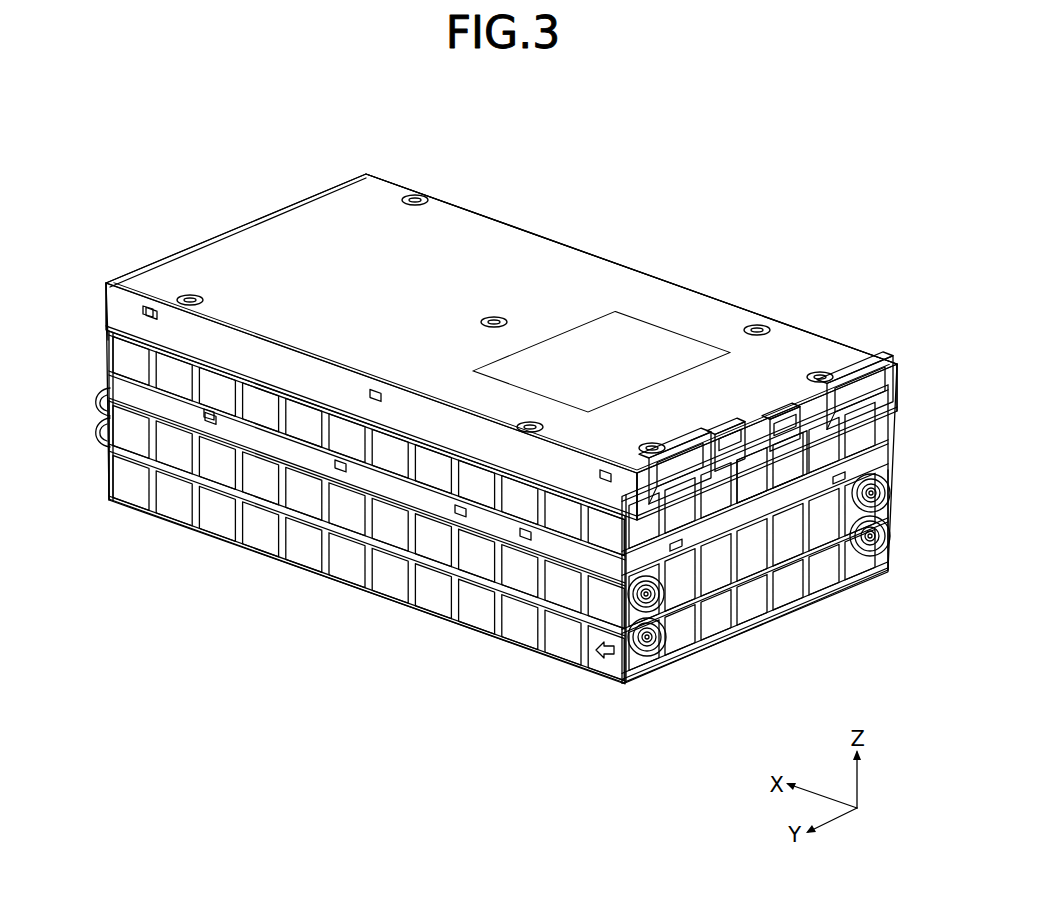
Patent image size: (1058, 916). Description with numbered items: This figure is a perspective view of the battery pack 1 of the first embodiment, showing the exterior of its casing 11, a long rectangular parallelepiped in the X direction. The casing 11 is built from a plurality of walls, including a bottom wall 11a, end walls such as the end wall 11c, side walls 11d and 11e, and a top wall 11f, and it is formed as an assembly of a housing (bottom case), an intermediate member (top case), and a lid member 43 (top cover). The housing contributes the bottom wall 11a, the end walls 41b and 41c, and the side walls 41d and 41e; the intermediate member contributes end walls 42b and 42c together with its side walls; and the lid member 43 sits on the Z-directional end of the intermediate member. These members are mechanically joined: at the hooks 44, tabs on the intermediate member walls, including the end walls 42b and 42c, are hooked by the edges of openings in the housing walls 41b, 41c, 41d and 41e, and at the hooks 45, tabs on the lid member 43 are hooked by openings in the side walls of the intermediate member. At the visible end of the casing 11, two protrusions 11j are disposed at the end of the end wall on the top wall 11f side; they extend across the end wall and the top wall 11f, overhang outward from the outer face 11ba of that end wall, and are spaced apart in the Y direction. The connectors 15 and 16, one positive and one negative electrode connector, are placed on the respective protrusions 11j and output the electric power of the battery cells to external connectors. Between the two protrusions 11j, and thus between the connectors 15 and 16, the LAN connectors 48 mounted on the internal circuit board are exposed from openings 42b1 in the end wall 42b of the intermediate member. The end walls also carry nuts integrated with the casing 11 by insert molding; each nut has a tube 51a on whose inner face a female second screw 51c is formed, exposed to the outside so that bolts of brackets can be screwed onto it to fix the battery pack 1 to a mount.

The battery pack 1 is at (330, 147).
The casing 11 is at (416, 192).
The bottom wall 11a is at (208, 543).
The outer face of end wall 11ba is at (695, 672).
The end wall 11c is at (108, 311).
The side wall 11d is at (388, 570).
The side wall 11e is at (530, 236).
The top wall 11f is at (485, 242).
The protrusion 11j is at (590, 585).
The connector 15 is at (836, 378).
The connector 16 is at (675, 478).
The end wall of housing 41b is at (745, 615).
The end wall of housing 41c is at (110, 485).
The side wall of housing 41d is at (470, 610).
The side wall of housing 41e is at (888, 568).
The end wall of intermediate member 42b is at (868, 436).
The opening 42b1 is at (760, 440).
The end wall of intermediate member 42c is at (110, 330).
The lid member 43 is at (183, 266).
The hook 44 is at (196, 418).
The hook 45 is at (131, 299).
The connector 48 is at (737, 437).
The tube 51a is at (98, 442).
The second screw 51c is at (665, 602).